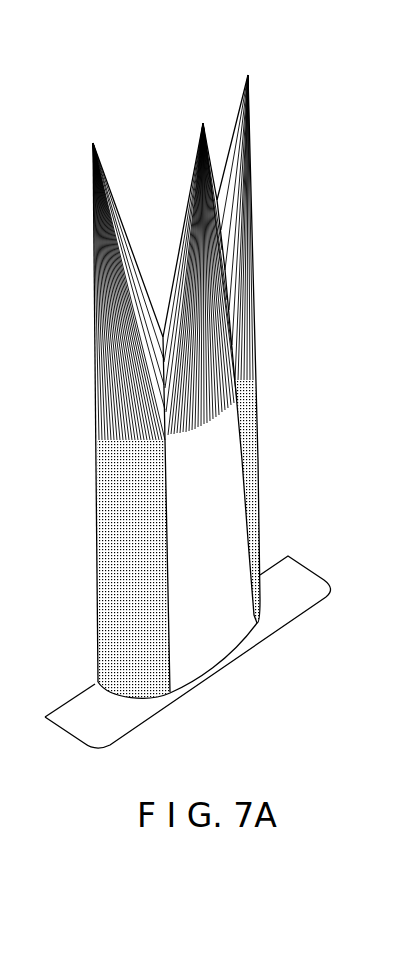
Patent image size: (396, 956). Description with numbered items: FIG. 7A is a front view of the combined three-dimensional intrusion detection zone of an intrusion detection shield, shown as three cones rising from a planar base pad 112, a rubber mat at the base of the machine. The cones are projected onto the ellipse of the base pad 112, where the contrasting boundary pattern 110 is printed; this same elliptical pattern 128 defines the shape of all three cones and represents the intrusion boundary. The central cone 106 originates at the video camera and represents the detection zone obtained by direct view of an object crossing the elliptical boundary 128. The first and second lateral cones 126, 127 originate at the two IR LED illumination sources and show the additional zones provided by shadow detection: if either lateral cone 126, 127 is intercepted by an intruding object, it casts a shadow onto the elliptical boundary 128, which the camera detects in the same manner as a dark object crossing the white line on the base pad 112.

The conical intrusion detection zone 106 is at (193, 142).
The contrasting boundary pattern 110 is at (221, 669).
The base pad 112 is at (307, 583).
The first lateral cone 126 is at (85, 147).
The second lateral cone 127 is at (242, 88).
The elliptical pattern 128 is at (238, 641).